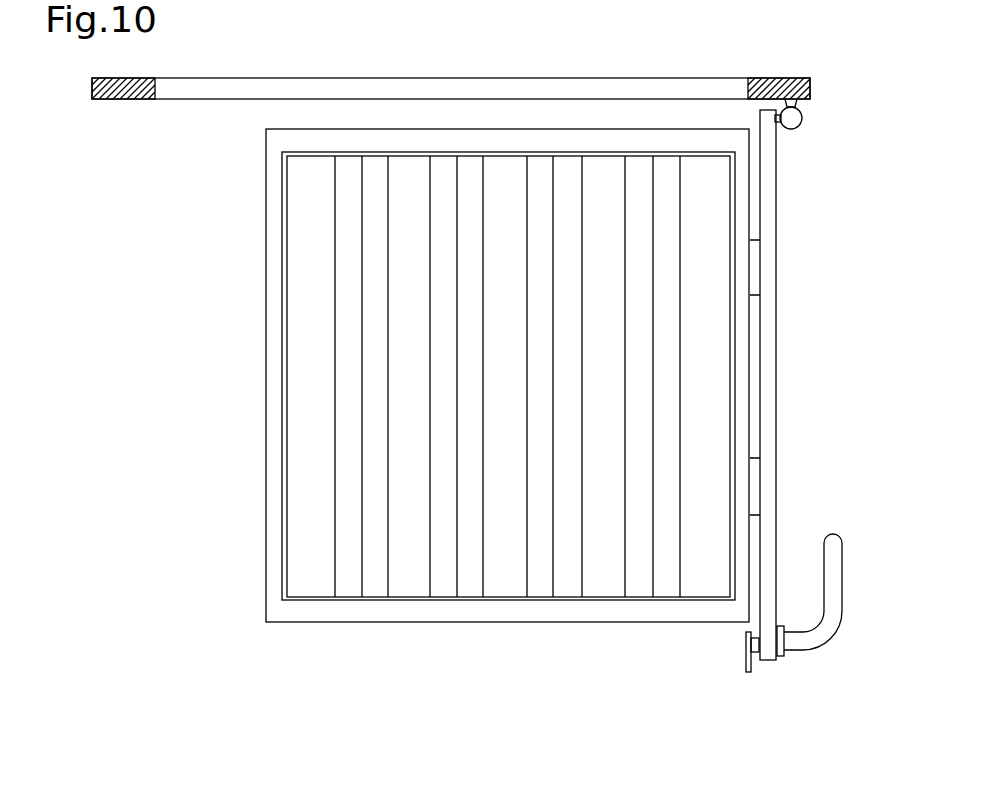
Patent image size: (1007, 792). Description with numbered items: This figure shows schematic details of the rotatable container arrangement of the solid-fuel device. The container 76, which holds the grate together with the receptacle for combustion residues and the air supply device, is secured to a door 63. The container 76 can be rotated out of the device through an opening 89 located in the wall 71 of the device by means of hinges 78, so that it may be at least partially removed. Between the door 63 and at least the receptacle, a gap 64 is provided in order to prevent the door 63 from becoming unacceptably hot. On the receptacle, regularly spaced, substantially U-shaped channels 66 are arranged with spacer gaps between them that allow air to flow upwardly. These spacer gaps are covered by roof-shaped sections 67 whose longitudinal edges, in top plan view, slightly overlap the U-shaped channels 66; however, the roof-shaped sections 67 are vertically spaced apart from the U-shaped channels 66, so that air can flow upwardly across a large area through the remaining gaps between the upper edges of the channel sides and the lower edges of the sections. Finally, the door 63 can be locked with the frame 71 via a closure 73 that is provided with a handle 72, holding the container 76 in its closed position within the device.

The opening 89 is at (700, 88).
The wall 71 is at (780, 80).
The hinges 78 is at (800, 127).
The door 63 is at (772, 323).
The U-shaped channels 66 is at (315, 567).
The roof-shaped sections 67 is at (452, 562).
The container 76 is at (738, 235).
The gap 64 is at (757, 420).
The handle 72 is at (832, 547).
The closure 73 is at (768, 682).